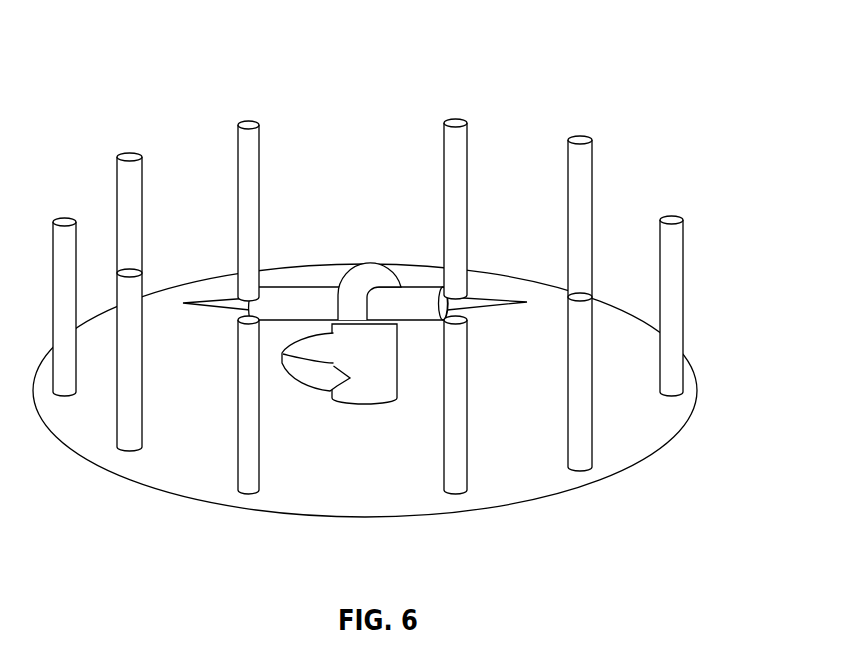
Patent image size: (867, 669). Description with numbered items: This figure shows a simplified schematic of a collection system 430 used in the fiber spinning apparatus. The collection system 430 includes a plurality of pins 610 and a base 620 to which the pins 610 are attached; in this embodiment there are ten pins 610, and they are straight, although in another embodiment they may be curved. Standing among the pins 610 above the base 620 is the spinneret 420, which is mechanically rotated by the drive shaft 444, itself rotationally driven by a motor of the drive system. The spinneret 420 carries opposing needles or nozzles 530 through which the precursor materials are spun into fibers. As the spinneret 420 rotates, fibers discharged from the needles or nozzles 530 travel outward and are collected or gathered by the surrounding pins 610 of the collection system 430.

The collection system 430 is at (394, 278).
The spinneret 420 is at (300, 275).
The needles or nozzles 530 is at (498, 290).
The drive shaft 444 is at (361, 412).
The pins 610 is at (670, 219).
The base 620 is at (672, 417).